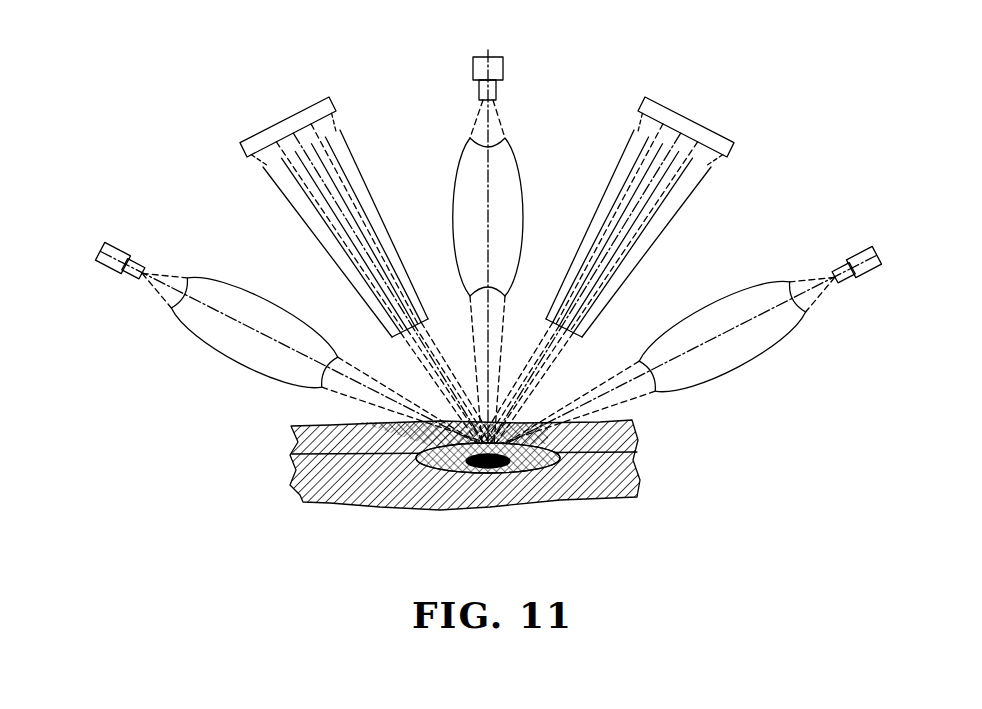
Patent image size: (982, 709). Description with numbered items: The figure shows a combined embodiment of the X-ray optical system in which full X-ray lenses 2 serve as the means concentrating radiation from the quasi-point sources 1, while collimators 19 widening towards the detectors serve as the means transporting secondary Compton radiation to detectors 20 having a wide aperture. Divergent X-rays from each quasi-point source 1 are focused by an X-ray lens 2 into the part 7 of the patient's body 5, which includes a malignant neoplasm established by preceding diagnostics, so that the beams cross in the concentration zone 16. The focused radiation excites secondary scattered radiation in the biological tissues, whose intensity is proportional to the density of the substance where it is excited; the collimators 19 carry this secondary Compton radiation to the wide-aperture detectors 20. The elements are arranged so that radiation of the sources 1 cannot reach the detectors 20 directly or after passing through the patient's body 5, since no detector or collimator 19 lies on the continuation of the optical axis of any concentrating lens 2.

The quasi-point X-ray source 1 is at (108, 265).
The X-ray lens 2 is at (202, 323).
The patient's body 5 is at (345, 482).
The part of the patient's body 7 is at (637, 452).
The zone 16 is at (292, 454).
The collimator 19 is at (288, 203).
The detector with a wide aperture 20 is at (243, 143).